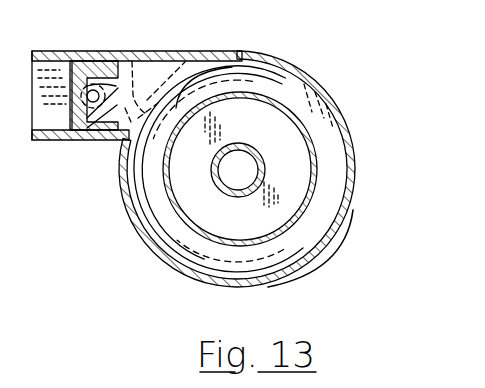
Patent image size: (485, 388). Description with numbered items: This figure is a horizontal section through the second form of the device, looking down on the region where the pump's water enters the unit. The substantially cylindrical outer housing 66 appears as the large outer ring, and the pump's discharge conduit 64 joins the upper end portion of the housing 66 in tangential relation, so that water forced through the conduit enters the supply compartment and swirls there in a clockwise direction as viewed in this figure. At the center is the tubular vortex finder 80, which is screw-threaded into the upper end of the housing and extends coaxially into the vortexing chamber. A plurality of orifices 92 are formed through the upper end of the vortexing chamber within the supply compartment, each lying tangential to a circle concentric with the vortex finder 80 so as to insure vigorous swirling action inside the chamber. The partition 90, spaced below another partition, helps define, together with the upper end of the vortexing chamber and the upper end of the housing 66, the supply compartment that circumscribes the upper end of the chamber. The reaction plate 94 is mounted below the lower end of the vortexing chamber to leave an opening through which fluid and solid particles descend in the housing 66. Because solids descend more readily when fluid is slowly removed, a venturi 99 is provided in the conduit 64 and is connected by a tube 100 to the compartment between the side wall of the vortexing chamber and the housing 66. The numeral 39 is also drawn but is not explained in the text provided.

The fastener 39 is at (298, 193).
The discharge conduit 64 is at (59, 141).
The outer housing 66 is at (122, 188).
The vortex finder 80 is at (215, 155).
The partition 90 is at (322, 212).
The orifices 92 is at (297, 117).
The reaction plate 94 is at (251, 122).
The venturi 99 is at (72, 88).
The tube 100 is at (133, 50).